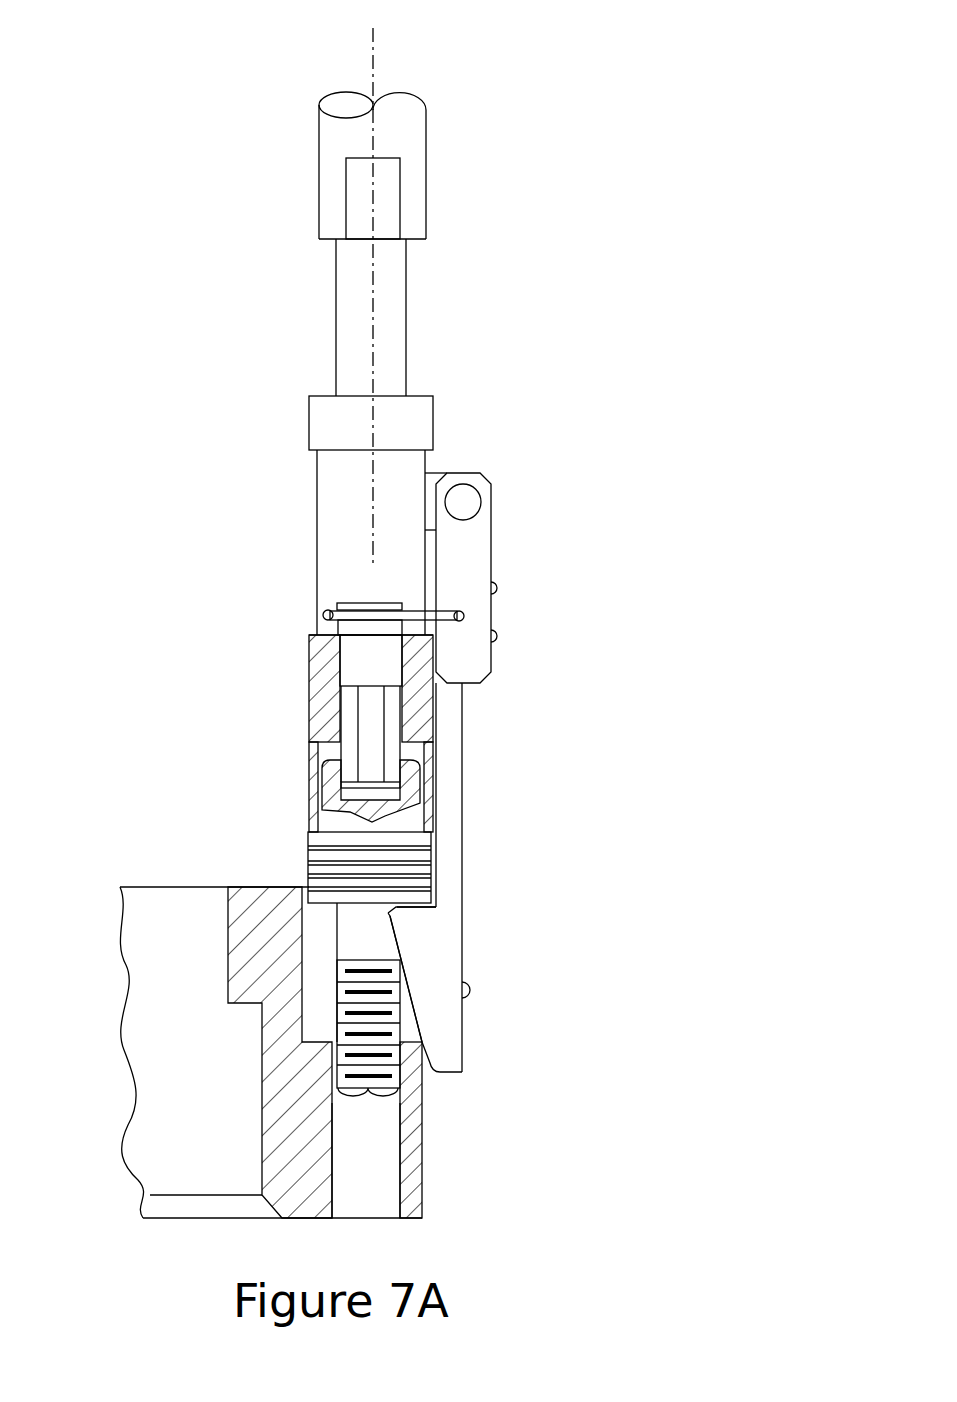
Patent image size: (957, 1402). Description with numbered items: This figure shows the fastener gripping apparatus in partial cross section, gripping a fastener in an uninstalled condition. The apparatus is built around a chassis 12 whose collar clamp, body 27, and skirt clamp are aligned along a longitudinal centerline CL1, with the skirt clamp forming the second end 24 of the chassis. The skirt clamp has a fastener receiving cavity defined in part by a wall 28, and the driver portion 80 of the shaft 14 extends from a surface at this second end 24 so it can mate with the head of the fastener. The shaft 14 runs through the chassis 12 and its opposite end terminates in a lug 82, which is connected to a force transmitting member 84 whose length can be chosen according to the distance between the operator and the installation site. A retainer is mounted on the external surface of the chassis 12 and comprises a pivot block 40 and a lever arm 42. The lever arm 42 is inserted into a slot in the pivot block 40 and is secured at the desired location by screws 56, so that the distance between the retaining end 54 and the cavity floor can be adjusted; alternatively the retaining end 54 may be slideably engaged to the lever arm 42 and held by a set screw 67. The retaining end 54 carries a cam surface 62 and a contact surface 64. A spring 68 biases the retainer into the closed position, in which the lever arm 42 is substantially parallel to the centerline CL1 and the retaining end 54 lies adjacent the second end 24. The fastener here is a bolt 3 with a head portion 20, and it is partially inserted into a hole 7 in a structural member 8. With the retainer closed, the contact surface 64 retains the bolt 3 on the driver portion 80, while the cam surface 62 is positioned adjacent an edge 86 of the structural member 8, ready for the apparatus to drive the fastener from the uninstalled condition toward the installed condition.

The longitudinal centerline CL1 is at (373, 58).
The force transmitting member 84 is at (319, 140).
The lug 82 is at (357, 190).
The shaft 14 is at (406, 298).
The chassis 12 is at (190, 450).
The body 27 is at (317, 540).
The spring 68 is at (358, 612).
The pivot block 40 is at (491, 540).
The screws 56 is at (493, 590).
The driver portion 80 is at (371, 712).
The lever arm 42 is at (462, 706).
The second end 24 is at (250, 781).
The wall 28 is at (422, 783).
The head portion 20 is at (340, 827).
The structural member 8 is at (177, 905).
The contact surface 64 is at (425, 900).
The retaining end 54 is at (462, 948).
The set screw 67 is at (470, 990).
The cam surface 62 is at (414, 1018).
The edge 86 is at (420, 1097).
The bolt 3 is at (370, 1057).
The hole 7 is at (370, 1163).